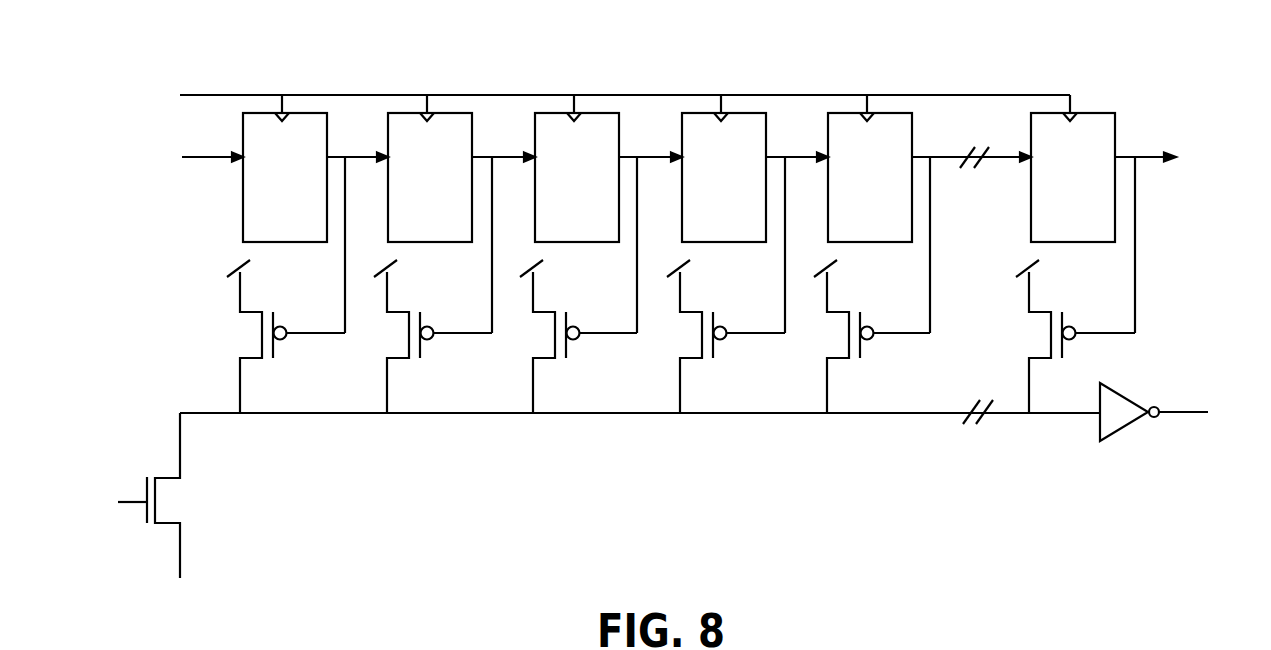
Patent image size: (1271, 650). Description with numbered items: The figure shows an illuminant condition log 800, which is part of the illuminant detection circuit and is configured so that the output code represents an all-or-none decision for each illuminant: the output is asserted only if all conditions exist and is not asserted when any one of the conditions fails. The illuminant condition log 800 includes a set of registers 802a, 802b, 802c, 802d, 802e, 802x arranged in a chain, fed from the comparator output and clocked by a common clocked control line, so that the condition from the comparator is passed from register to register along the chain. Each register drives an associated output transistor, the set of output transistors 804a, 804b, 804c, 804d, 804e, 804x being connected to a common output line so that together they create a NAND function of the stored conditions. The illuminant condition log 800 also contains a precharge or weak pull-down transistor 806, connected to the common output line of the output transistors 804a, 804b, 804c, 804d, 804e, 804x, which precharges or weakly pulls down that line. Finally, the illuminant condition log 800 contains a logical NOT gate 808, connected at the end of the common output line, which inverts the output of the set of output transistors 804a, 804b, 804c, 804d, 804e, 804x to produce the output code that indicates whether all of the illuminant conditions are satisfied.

The illuminant condition log 800 is at (1070, 33).
The register 802a is at (327, 138).
The register 802b is at (472, 138).
The register 802c is at (619, 138).
The register 802d is at (766, 138).
The register 802e is at (912, 138).
The register 802x is at (1115, 138).
The output transistor 804a is at (252, 312).
The output transistor 804b is at (392, 314).
The output transistor 804c is at (538, 314).
The output transistor 804d is at (685, 314).
The output transistor 804e is at (832, 314).
The output transistor 804x is at (1034, 314).
The precharge or weak pull-down transistor 806 is at (158, 504).
The logical NOT gate 808 is at (1118, 387).